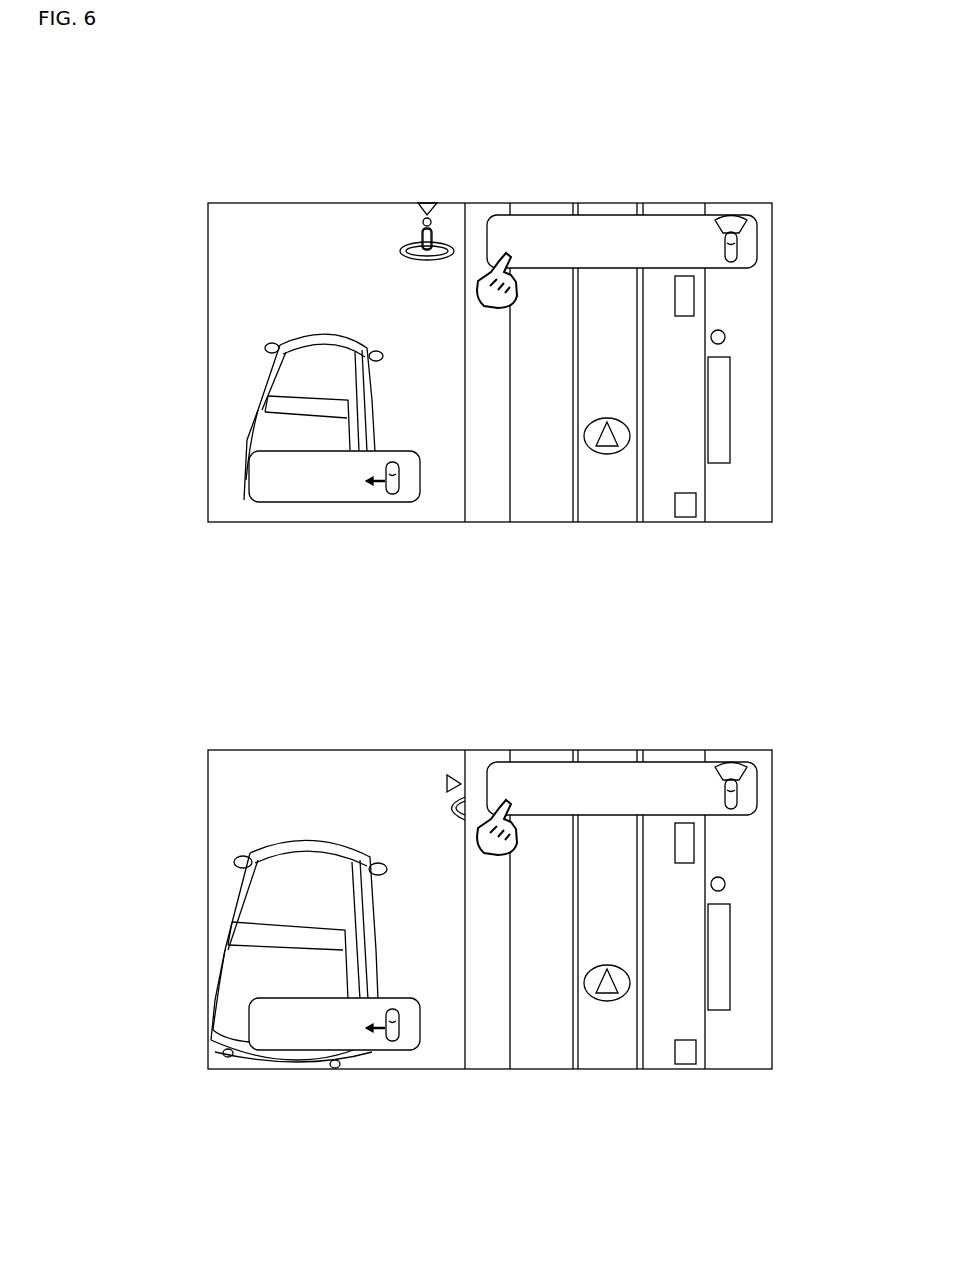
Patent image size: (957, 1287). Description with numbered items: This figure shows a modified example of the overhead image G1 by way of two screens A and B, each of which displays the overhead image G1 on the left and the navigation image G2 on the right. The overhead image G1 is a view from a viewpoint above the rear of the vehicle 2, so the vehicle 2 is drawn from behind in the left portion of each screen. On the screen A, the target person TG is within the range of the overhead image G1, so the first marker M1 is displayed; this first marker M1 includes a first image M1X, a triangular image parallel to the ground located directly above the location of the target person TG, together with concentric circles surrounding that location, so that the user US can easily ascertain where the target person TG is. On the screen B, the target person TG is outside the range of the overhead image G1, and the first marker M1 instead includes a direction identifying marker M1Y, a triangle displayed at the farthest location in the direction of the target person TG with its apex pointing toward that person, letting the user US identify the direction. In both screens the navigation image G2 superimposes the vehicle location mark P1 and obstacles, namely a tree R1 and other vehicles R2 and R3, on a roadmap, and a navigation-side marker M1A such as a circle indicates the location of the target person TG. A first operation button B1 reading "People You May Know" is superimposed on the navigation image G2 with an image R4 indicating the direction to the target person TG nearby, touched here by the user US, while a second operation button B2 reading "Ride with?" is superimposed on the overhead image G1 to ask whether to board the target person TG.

The screen A is at (205, 215).
The screen B is at (205, 763).
The vehicle 2 is at (330, 328).
The overhead image G1 is at (228, 315).
The navigation image G2 is at (752, 368).
The first operation button B1 is at (614, 215).
The second operation button B2 is at (272, 505).
The first marker M1 is at (405, 222).
The first image M1X is at (425, 206).
The direction identifying marker M1Y is at (400, 251).
The navigation-side marker M1A is at (724, 334).
The target person TG is at (432, 234).
The user US is at (495, 567).
The tree R1 is at (722, 463).
The other vehicle R2 is at (675, 300).
The other vehicle R3 is at (675, 505).
The image indicating the direction to the target person R4 is at (742, 245).
The vehicle location mark P1 is at (608, 418).